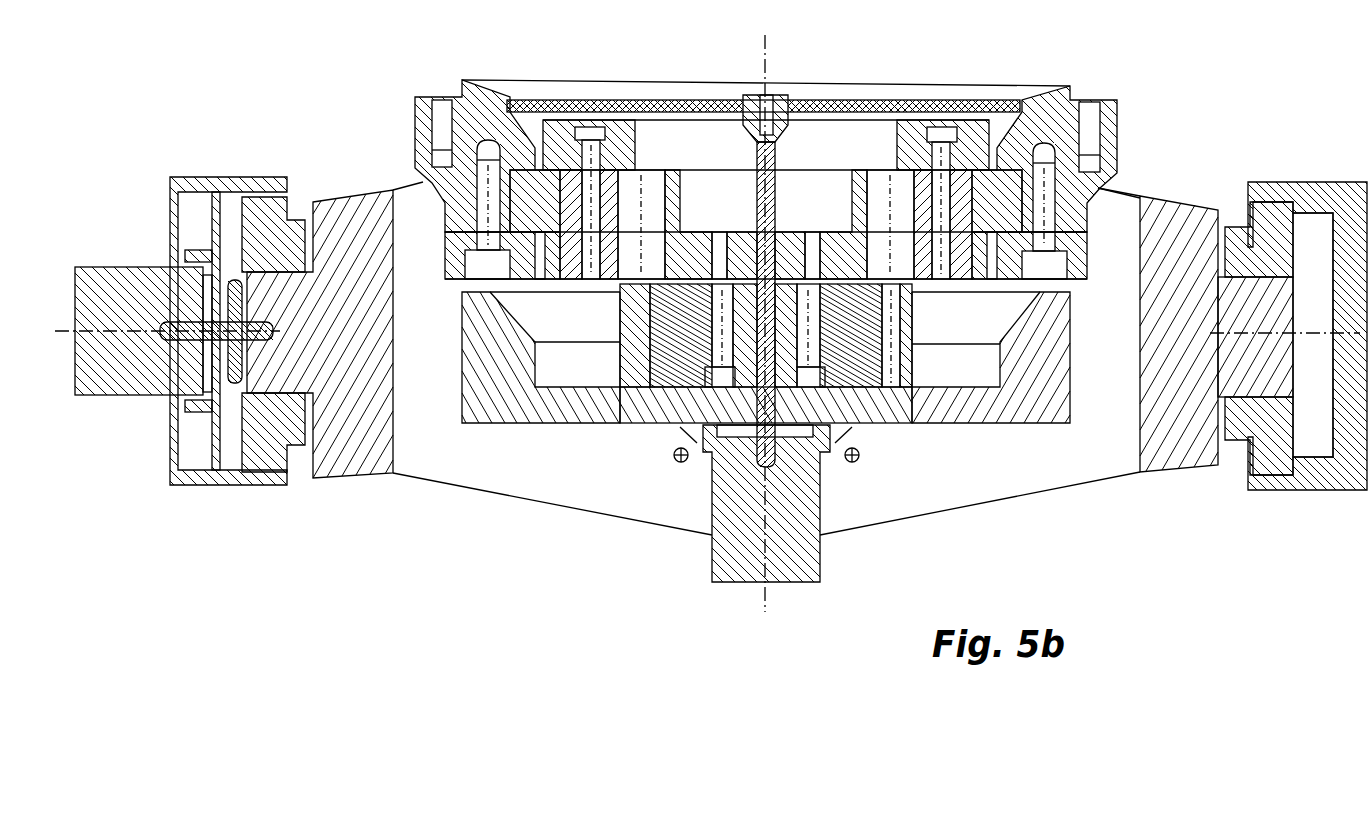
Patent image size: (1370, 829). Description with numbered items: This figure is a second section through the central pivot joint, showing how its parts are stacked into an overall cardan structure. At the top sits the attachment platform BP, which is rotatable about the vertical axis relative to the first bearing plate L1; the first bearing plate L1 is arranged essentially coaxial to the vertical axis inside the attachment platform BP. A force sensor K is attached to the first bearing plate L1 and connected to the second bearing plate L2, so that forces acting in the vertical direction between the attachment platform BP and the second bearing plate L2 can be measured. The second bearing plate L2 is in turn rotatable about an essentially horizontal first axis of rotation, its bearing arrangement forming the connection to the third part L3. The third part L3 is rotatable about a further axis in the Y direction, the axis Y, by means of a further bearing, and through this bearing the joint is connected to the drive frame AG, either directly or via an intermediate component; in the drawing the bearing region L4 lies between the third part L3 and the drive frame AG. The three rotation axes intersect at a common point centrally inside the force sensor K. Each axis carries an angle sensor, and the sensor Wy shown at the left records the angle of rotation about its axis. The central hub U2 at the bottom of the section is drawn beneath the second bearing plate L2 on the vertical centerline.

The attachment platform BP is at (864, 93).
The first bearing plate L1 is at (830, 240).
The force sensor K is at (922, 327).
The second bearing plate L2 is at (952, 412).
The third part L3 is at (1157, 463).
The fourth bearing L4 is at (1247, 427).
The drive frame AG is at (1333, 477).
The Y direction axis Y is at (1313, 343).
The angle sensor Wy is at (122, 383).
The hub U2 is at (807, 563).